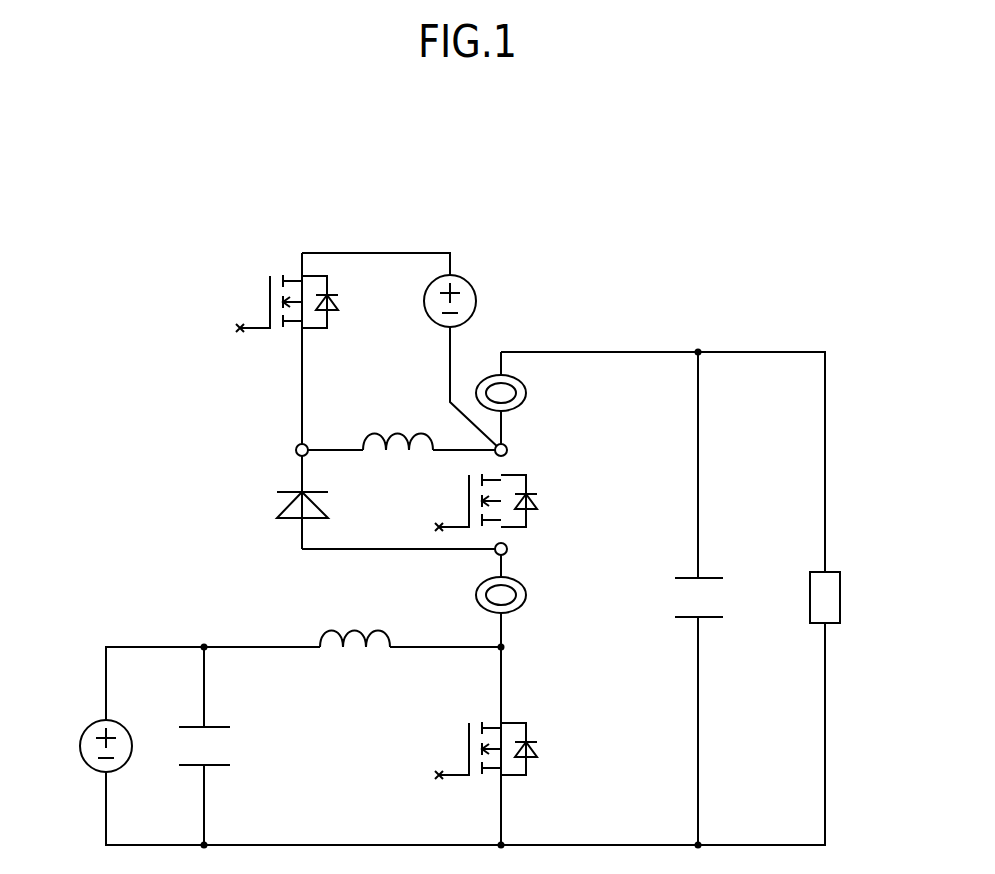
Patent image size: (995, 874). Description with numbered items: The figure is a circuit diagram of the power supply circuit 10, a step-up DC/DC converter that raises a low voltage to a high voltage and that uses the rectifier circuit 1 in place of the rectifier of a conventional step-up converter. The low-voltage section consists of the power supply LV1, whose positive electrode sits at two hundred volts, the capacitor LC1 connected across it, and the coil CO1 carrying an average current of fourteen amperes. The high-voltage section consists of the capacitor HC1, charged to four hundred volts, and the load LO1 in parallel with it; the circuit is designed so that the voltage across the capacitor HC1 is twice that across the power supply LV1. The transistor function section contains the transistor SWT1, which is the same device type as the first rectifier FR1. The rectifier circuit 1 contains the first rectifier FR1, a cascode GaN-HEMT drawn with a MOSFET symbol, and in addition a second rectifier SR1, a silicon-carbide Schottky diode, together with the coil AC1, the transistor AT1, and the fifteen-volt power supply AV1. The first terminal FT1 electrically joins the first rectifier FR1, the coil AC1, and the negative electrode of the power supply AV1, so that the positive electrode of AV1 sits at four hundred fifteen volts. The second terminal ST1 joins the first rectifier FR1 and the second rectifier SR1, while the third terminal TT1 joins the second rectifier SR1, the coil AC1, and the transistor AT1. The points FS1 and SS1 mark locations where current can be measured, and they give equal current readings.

The rectifier circuit 1 is at (190, 303).
The power supply circuit 10 is at (860, 251).
The transistor AT1 is at (342, 304).
The power supply AV1 is at (471, 284).
The current measurement point FS1 is at (528, 392).
The first terminal FT1 is at (508, 451).
The third terminal TT1 is at (295, 451).
The coil AC1 is at (417, 436).
The second rectifier SR1 is at (285, 510).
The first rectifier FR1 is at (540, 508).
The second terminal ST1 is at (508, 550).
The current measurement point SS1 is at (528, 595).
The capacitor HC1 is at (684, 576).
The load LO1 is at (843, 596).
The transistor SWT1 is at (540, 754).
The coil CO1 is at (330, 633).
The capacitor LC1 is at (192, 725).
The power supply LV1 is at (87, 728).